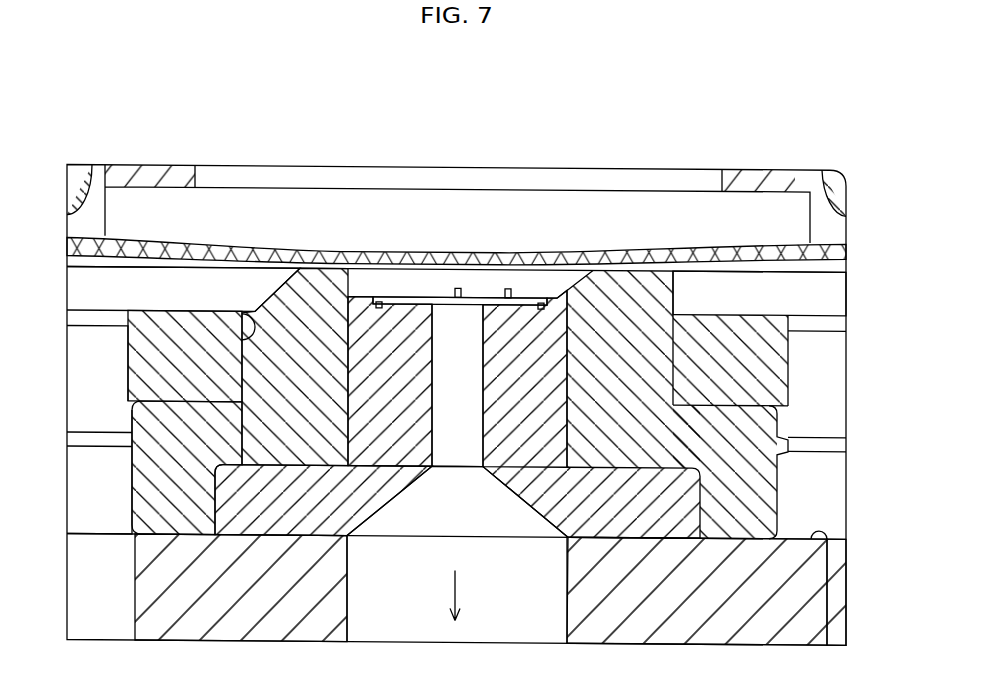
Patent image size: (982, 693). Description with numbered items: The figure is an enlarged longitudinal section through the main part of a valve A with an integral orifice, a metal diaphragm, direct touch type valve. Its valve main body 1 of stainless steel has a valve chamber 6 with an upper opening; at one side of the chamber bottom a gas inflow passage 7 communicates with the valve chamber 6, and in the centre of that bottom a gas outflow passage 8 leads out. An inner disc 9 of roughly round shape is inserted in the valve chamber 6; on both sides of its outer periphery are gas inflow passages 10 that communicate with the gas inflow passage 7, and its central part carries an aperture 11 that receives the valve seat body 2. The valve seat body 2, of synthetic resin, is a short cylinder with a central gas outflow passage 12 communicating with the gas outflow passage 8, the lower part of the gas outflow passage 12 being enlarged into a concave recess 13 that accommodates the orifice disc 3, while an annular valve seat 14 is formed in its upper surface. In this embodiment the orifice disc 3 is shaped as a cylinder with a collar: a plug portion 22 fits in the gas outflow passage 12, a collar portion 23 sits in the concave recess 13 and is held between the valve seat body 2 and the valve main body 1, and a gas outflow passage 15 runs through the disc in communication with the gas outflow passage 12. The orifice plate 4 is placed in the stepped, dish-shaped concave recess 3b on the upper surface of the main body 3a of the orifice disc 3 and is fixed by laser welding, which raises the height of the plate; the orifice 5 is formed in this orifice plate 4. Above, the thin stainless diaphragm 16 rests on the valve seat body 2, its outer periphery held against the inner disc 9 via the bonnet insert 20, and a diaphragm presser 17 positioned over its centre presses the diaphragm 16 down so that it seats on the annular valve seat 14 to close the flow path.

The valve main body 1 is at (685, 608).
The valve seat body 2 is at (752, 515).
The orifice disc 3 is at (517, 257).
The main body of the orifice disc 3a is at (625, 518).
The dish-shaped concave recess 3b is at (548, 296).
The orifice plate 4 is at (407, 297).
The orifice 5 is at (458, 292).
The valve chamber 6 is at (825, 540).
The gas inflow passage 7 is at (137, 620).
The gas outflow passage 8 is at (350, 607).
The inner disc 9 is at (173, 382).
The gas inflow passages 10 is at (128, 408).
The aperture 11 is at (257, 310).
The gas outflow passage 12 is at (338, 262).
The concave recess 13 is at (216, 509).
The annular valve seat 14 is at (607, 282).
The gas outflow passage 15 is at (485, 452).
The diaphragm 16 is at (741, 262).
The diaphragm presser 17 is at (480, 212).
The bonnet insert 20 is at (828, 182).
The plug portion 22 is at (523, 427).
The collar portion 23 is at (317, 517).
The valve with an integral orifice A is at (882, 136).